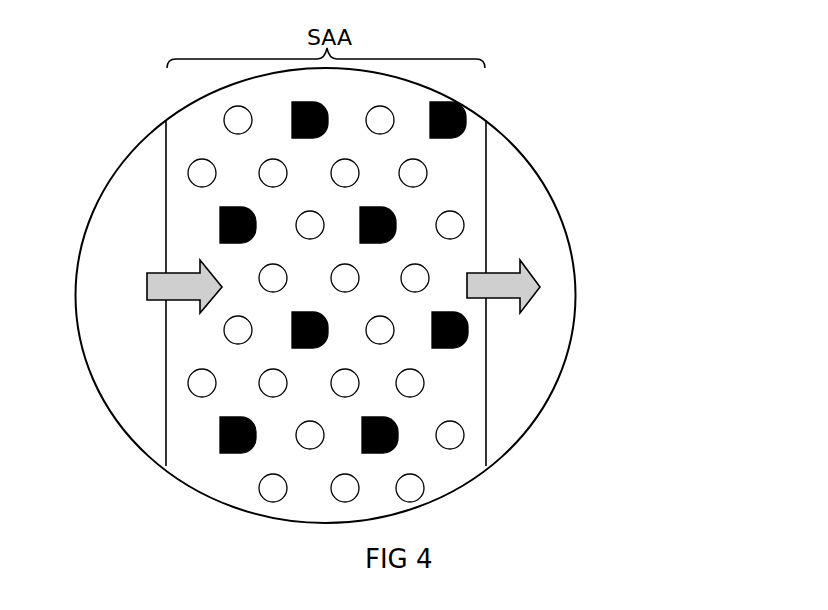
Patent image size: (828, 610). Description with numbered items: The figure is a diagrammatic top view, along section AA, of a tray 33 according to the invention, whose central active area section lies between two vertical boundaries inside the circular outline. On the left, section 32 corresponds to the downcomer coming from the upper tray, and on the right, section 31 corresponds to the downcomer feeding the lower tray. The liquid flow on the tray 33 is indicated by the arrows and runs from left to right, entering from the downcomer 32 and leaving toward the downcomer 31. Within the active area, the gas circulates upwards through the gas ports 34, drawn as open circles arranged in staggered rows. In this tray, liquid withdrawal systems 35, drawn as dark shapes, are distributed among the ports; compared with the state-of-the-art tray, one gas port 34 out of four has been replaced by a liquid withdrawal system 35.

The downcomer 31 is at (540, 328).
The downcomer 32 is at (132, 278).
The tray 33 is at (348, 135).
The gas port 34 is at (415, 173).
The liquid withdrawal system 35 is at (326, 323).